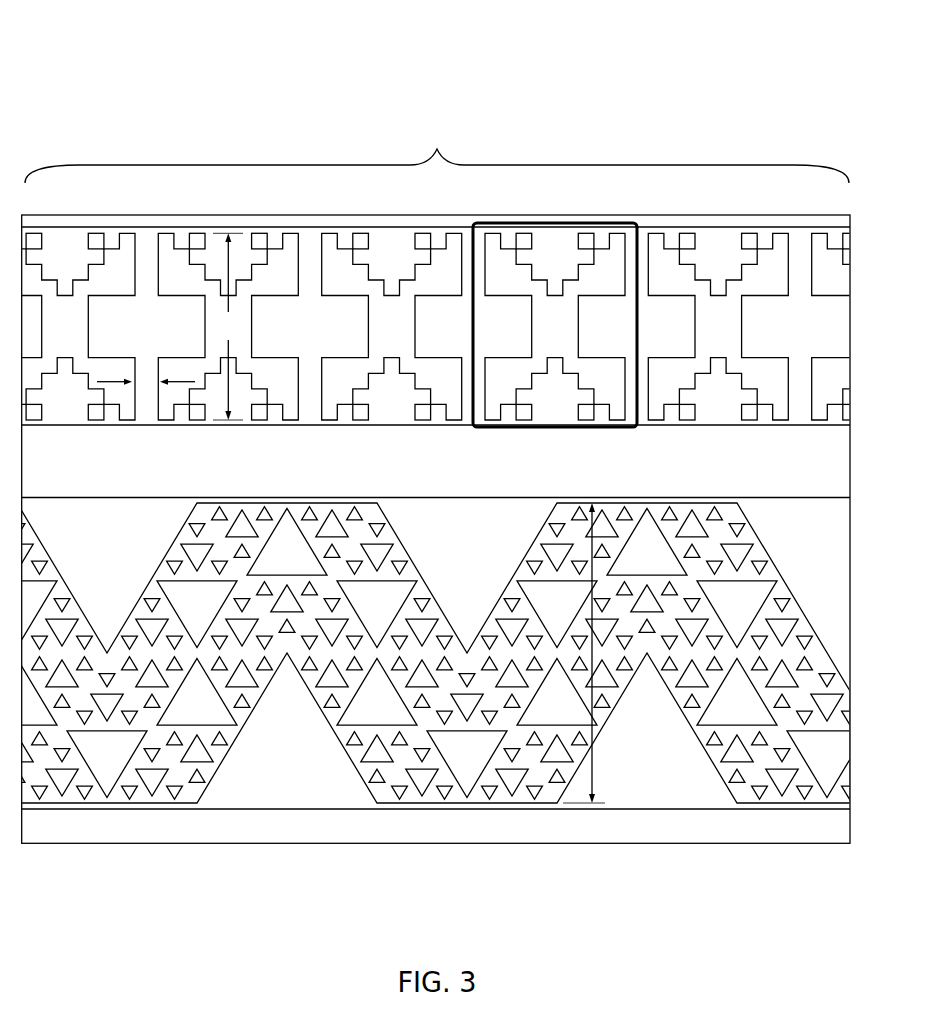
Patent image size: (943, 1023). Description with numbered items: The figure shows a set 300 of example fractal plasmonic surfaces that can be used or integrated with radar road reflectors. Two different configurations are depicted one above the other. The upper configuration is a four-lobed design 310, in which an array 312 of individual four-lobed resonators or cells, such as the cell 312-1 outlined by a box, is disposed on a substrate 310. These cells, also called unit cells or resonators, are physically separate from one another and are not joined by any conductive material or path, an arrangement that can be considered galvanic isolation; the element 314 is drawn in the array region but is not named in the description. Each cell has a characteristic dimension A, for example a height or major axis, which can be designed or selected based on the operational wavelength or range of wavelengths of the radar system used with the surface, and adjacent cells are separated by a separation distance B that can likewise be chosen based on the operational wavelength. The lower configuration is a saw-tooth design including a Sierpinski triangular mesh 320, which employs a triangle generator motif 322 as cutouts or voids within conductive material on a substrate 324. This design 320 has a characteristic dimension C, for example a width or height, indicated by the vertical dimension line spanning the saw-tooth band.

The set of fractal plasmonic surfaces 300 is at (136, 60).
The four-lobed design 310 is at (713, 243).
The array of four-lobed resonators 312 is at (471, 272).
The four-lobed resonator cell 312-1 is at (590, 430).
The fractal cross element 314 is at (308, 243).
The saw-tooth design with Sierpinski triangular mesh 320 is at (233, 792).
The triangle generator motif 322 is at (467, 767).
The substrate 324 is at (330, 793).
The characteristic dimension A is at (228, 326).
The separation distance B is at (110, 384).
The characteristic dimension C is at (593, 777).